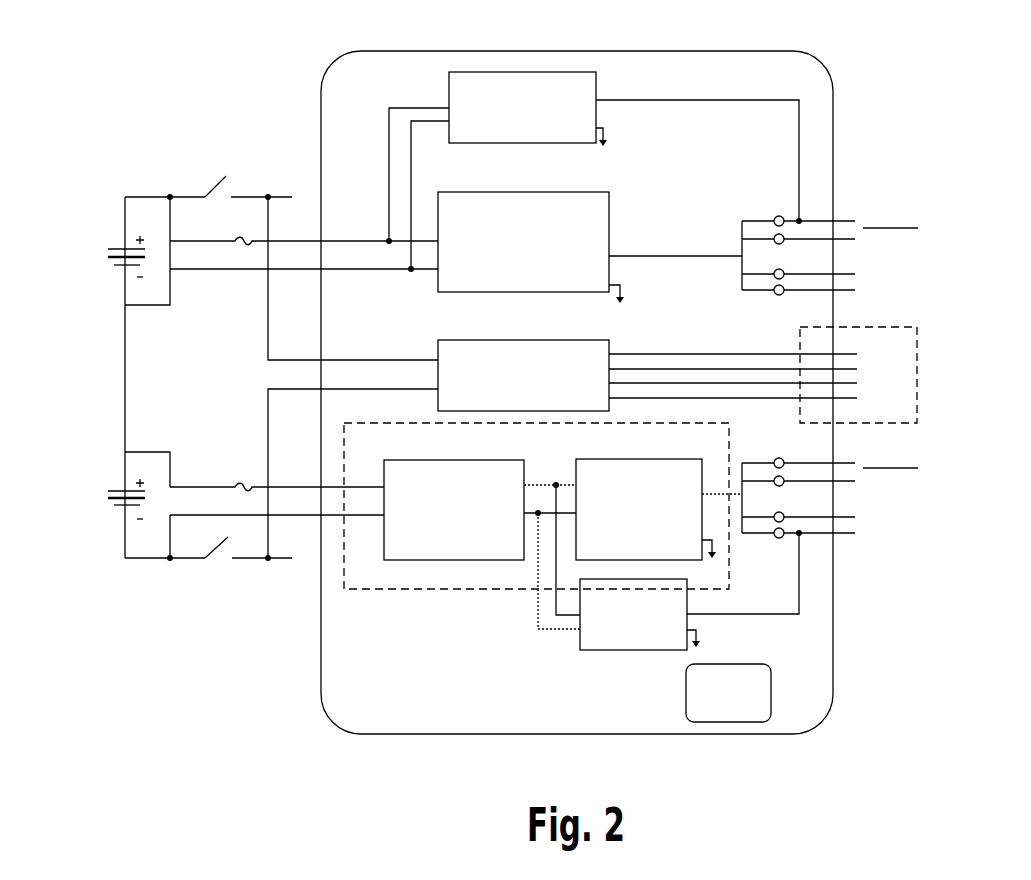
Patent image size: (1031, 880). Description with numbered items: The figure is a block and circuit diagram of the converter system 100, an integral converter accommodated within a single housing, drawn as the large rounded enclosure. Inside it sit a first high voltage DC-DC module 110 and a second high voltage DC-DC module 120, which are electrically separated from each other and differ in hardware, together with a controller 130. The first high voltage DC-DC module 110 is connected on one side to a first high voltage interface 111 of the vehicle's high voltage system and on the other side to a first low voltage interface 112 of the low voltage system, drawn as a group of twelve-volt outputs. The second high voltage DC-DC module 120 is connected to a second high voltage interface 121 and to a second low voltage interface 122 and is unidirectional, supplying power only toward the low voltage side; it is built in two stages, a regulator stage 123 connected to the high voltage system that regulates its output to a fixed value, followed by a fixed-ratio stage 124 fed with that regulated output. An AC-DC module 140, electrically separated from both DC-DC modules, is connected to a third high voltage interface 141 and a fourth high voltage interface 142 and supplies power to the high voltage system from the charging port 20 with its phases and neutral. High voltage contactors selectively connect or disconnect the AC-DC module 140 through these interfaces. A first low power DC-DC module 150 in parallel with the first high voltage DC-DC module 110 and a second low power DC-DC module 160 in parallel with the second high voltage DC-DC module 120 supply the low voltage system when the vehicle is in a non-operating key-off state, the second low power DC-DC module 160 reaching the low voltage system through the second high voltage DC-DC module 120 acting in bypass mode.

The converter system 100 is at (191, 80).
The third high voltage interface 141 is at (305, 148).
The fourth high voltage interface 142 is at (298, 593).
The first high voltage interface 111 is at (147, 212).
The second high voltage interface 121 is at (142, 541).
The first low power DC-DC module 150 is at (548, 124).
The first high voltage DC-DC module 110 is at (544, 254).
The first low voltage interface 112 is at (808, 205).
The AC-DC module 140 is at (545, 392).
The charging port 20 is at (917, 371).
The second high voltage DC-DC module 120 is at (464, 589).
The regulator stage 123 is at (474, 522).
The fixed-ratio stage 124 is at (659, 522).
The second low power DC-DC module 160 is at (654, 626).
The second low voltage interface 122 is at (810, 547).
The controller 130 is at (749, 706).